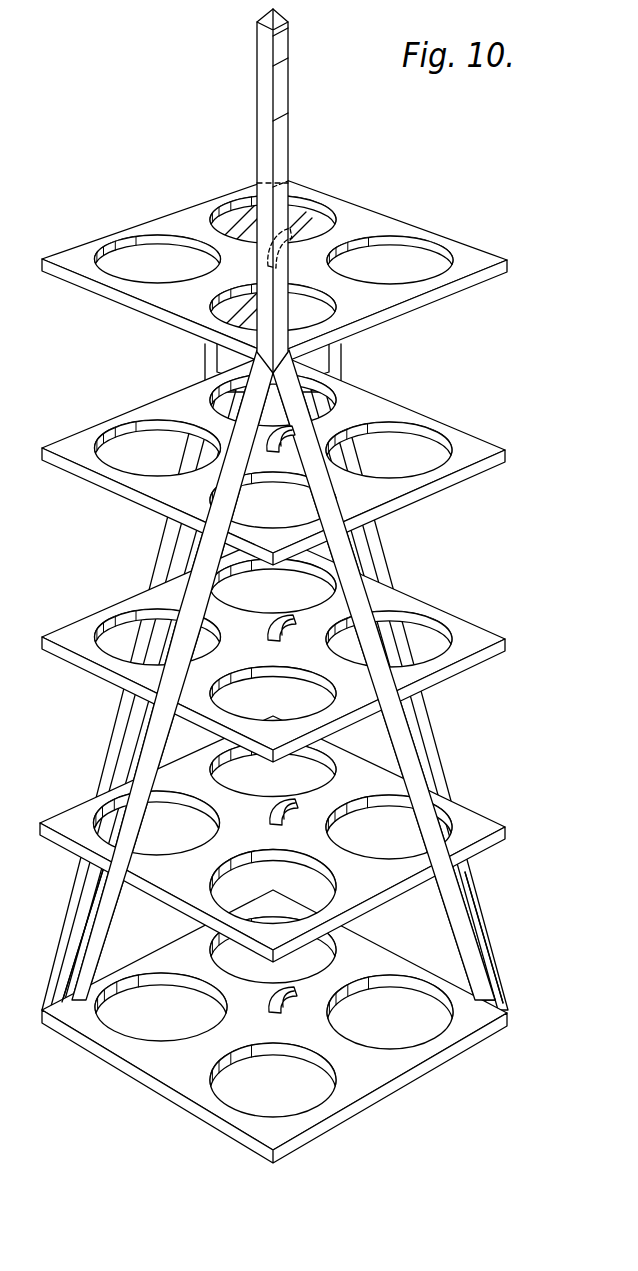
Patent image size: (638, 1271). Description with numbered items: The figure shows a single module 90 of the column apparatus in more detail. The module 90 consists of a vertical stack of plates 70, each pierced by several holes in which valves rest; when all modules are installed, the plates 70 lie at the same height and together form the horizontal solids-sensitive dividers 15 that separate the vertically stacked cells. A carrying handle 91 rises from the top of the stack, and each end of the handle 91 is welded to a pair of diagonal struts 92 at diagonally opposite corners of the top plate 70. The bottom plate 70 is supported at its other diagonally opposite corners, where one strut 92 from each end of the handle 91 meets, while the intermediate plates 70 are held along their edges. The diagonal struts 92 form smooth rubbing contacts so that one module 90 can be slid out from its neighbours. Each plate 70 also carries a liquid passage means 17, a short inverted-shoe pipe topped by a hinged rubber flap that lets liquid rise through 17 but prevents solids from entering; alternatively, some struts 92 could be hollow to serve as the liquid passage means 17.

The horizontal divider 15 is at (94, 306).
The liquid passage means 17 is at (264, 627).
The plate 70 is at (292, 670).
The module 90 is at (292, 586).
The carrying handle 91 is at (280, 101).
The diagonal strut 92 is at (198, 556).